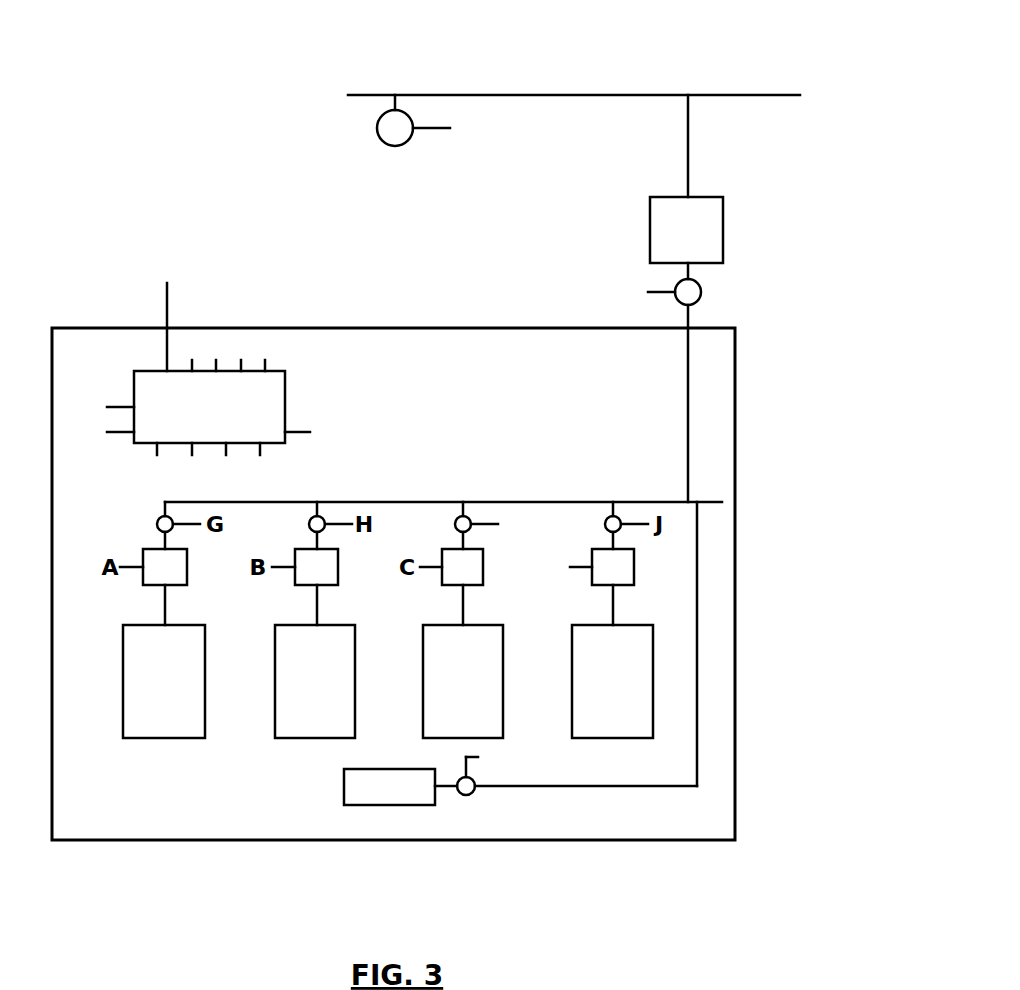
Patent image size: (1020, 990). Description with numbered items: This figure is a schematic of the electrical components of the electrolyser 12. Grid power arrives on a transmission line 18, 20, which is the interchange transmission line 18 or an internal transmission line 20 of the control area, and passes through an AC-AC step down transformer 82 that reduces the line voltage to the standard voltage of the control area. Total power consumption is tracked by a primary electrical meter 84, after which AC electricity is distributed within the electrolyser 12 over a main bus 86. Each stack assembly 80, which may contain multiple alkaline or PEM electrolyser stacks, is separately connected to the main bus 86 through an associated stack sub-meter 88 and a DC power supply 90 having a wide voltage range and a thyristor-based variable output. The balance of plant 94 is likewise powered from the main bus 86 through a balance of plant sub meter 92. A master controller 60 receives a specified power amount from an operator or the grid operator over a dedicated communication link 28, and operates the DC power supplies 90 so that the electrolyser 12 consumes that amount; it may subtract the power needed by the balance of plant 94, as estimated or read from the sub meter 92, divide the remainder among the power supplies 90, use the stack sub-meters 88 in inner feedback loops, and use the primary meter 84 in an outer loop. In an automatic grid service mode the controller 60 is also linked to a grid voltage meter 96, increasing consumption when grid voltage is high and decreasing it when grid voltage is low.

The interchange transmission line 18 is at (574, 51).
The internal transmission line 20 is at (510, 95).
The grid voltage meter 96 is at (395, 146).
The AC-AC step down transformer 82 is at (723, 230).
The primary electrical meter 84 is at (701, 292).
The electrolyser 12 is at (735, 415).
The communication link 28 is at (167, 300).
The master controller 60 is at (285, 407).
The main bus 86 is at (715, 500).
The stack sub-meter 88 is at (467, 517).
The DC power supply 90 is at (634, 565).
The stack assembly 80 is at (653, 680).
The balance of plant 94 is at (387, 805).
The balance of plant sub meter 92 is at (468, 795).